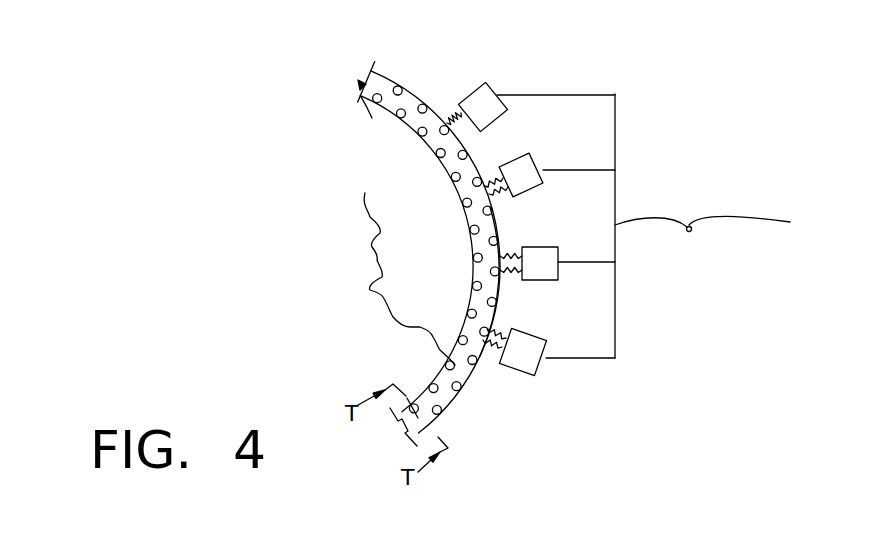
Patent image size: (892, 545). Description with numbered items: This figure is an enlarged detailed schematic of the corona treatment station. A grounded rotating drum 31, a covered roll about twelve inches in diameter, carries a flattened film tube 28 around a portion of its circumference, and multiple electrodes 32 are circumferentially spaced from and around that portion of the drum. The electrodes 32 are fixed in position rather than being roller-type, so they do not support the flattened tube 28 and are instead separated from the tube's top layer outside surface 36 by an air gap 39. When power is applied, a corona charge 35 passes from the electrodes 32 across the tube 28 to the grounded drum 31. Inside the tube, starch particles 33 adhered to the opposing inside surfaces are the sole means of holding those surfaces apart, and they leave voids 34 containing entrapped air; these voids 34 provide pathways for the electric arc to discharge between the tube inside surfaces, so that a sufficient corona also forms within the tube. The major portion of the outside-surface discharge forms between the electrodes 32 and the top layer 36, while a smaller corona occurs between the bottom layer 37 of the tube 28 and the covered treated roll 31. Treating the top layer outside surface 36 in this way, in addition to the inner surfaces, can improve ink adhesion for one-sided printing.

The flat film tube 28 is at (482, 356).
The rotating drum 31 is at (414, 261).
The electrodes 32 is at (492, 80).
The starch particles 33 is at (423, 179).
The voids 34 is at (365, 193).
The corona charge 35 is at (490, 182).
The top layer 36 is at (374, 74).
The bottom layer 37 is at (367, 105).
The air gap 39 is at (453, 112).